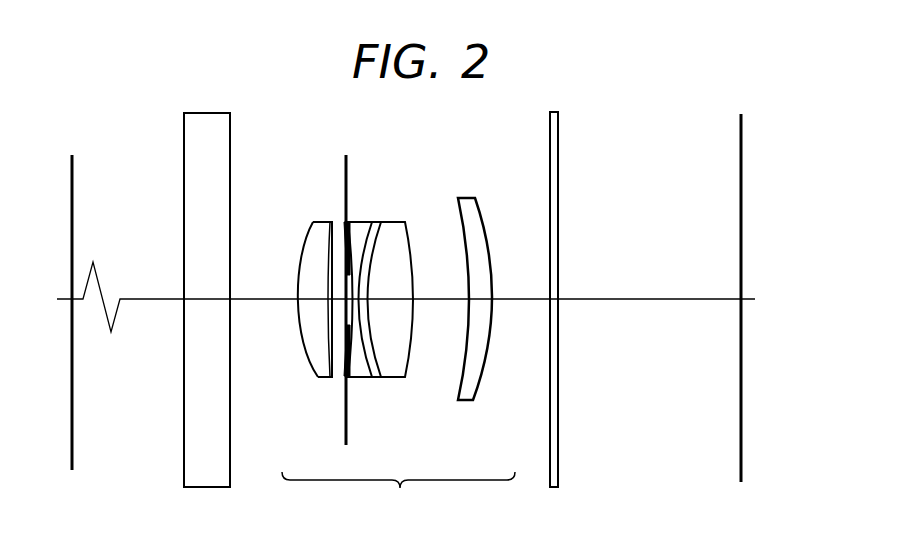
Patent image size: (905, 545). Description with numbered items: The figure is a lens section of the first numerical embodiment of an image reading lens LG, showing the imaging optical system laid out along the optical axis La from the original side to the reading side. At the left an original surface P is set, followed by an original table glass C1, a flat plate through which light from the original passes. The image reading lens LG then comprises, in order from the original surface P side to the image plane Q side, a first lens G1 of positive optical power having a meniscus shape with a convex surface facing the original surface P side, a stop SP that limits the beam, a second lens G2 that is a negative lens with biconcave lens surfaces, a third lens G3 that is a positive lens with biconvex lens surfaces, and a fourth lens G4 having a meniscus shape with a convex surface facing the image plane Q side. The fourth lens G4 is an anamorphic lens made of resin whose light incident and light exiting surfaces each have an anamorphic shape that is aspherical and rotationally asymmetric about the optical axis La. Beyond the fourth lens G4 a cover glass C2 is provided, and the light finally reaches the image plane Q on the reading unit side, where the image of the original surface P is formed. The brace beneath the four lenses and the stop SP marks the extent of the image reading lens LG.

The original surface P is at (74, 200).
The original table glass C1 is at (190, 398).
The stop SP is at (343, 172).
The first lens G1 is at (321, 364).
The second lens G2 is at (358, 232).
The third lens G3 is at (395, 365).
The fourth lens G4 is at (478, 370).
The optical axis La is at (522, 300).
The cover glass C2 is at (559, 210).
The image plane Q is at (742, 342).
The image reading lens LG is at (398, 496).